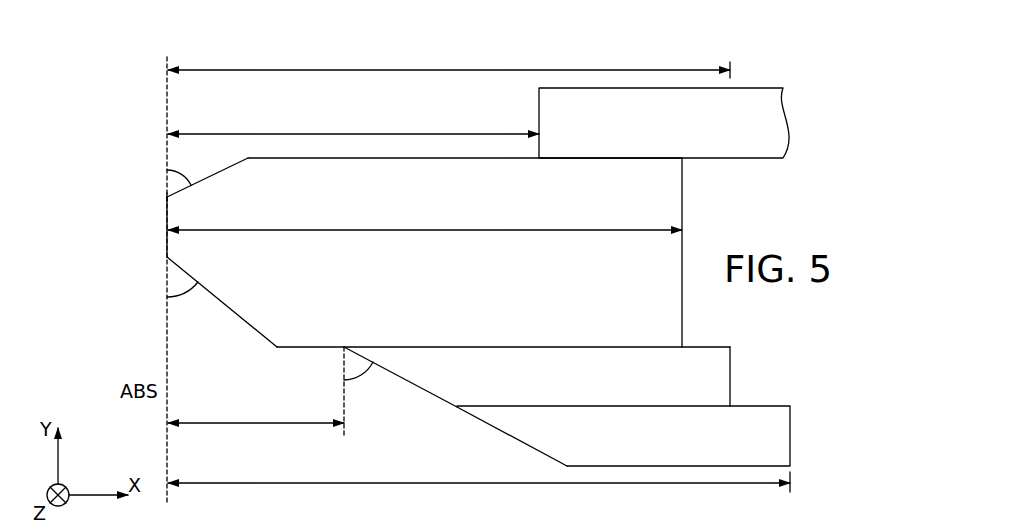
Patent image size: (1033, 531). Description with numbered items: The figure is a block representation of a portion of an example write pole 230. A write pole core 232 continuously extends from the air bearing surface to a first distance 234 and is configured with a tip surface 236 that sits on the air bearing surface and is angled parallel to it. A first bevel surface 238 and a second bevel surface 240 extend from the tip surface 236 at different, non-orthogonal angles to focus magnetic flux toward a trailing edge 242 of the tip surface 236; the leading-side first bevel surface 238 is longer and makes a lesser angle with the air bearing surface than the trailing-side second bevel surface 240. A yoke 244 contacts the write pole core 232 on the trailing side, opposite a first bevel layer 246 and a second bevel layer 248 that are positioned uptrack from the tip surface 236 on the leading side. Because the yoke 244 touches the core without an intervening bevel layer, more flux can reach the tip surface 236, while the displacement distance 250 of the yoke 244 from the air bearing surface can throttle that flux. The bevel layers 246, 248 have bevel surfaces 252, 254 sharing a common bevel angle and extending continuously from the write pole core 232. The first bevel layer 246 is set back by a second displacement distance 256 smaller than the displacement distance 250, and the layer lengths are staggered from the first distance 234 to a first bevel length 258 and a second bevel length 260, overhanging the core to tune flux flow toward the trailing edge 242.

The write pole 230 is at (127, 48).
The write pole core 232 is at (675, 338).
The first distance 234 is at (425, 220).
The tip surface 236 is at (167, 257).
The first bevel surface 238 is at (249, 323).
The second bevel surface 240 is at (211, 178).
The trailing edge 242 is at (162, 204).
The yoke 244 is at (777, 134).
The first bevel layer 246 is at (723, 388).
The second bevel layer 248 is at (782, 447).
The displacement distance 250 is at (353, 122).
The bevel surface 252 is at (428, 391).
The bevel surface 254 is at (487, 427).
The second displacement distance 256 is at (256, 412).
The first bevel length 258 is at (449, 62).
The second bevel length 260 is at (479, 489).